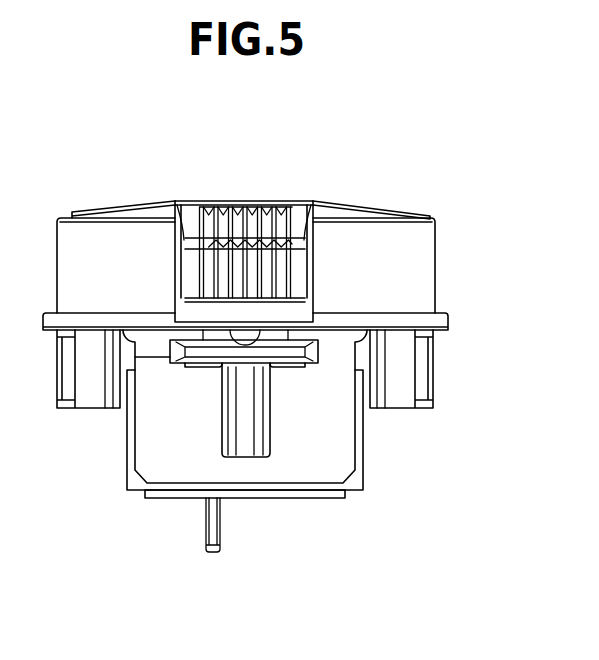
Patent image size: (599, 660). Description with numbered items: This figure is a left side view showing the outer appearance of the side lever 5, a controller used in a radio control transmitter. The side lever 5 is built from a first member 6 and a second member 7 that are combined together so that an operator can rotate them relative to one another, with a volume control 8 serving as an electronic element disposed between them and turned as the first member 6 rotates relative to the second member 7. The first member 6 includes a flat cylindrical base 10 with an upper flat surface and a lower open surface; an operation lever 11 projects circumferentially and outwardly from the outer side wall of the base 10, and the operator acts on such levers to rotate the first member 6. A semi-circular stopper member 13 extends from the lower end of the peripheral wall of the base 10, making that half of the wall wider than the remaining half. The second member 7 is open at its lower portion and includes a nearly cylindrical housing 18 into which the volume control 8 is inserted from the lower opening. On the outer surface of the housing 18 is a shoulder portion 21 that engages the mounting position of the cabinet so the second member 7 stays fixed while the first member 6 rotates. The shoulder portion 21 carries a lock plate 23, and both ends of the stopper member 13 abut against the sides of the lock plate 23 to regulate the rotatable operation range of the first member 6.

The side lever 5 is at (452, 171).
The first member 6 is at (368, 208).
The second member 7 is at (342, 457).
The volume control 8 is at (323, 500).
The flat cylindrical base 10 is at (415, 277).
The operation lever 11 is at (272, 210).
The semi-circular stopper member 13 is at (425, 383).
The housing 18 is at (318, 348).
The shoulder portion 21 is at (205, 368).
The lock plate 23 is at (262, 470).